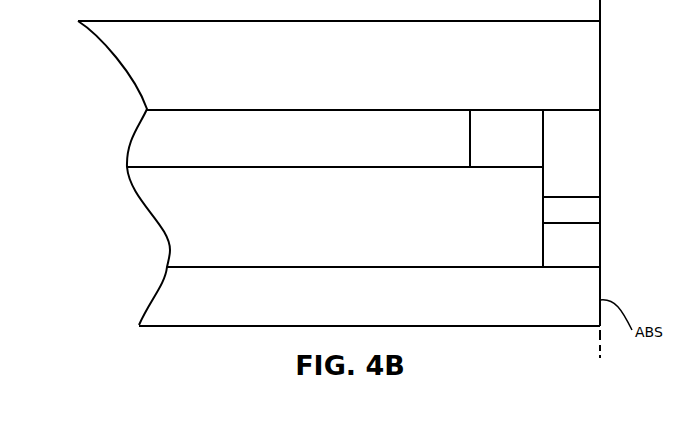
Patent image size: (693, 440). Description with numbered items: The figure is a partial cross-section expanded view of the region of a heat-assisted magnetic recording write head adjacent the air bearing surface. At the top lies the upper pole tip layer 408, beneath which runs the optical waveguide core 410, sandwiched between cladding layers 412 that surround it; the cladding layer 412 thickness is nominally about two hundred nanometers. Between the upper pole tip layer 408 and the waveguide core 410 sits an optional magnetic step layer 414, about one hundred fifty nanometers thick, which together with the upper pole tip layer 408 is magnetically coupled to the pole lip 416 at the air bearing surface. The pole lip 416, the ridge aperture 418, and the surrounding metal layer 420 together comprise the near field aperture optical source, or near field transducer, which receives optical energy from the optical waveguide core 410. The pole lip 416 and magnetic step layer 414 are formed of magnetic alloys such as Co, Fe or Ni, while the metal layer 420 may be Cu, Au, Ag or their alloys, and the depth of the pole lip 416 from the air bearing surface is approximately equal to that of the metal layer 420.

The upper pole tip layer 408 is at (403, 61).
The optical waveguide core 410 is at (433, 188).
The cladding layer 412 is at (363, 208).
The magnetic step layer 414 is at (495, 138).
The pole lip 416 is at (571, 170).
The aperture 418 is at (571, 212).
The metal layer 420 is at (571, 247).